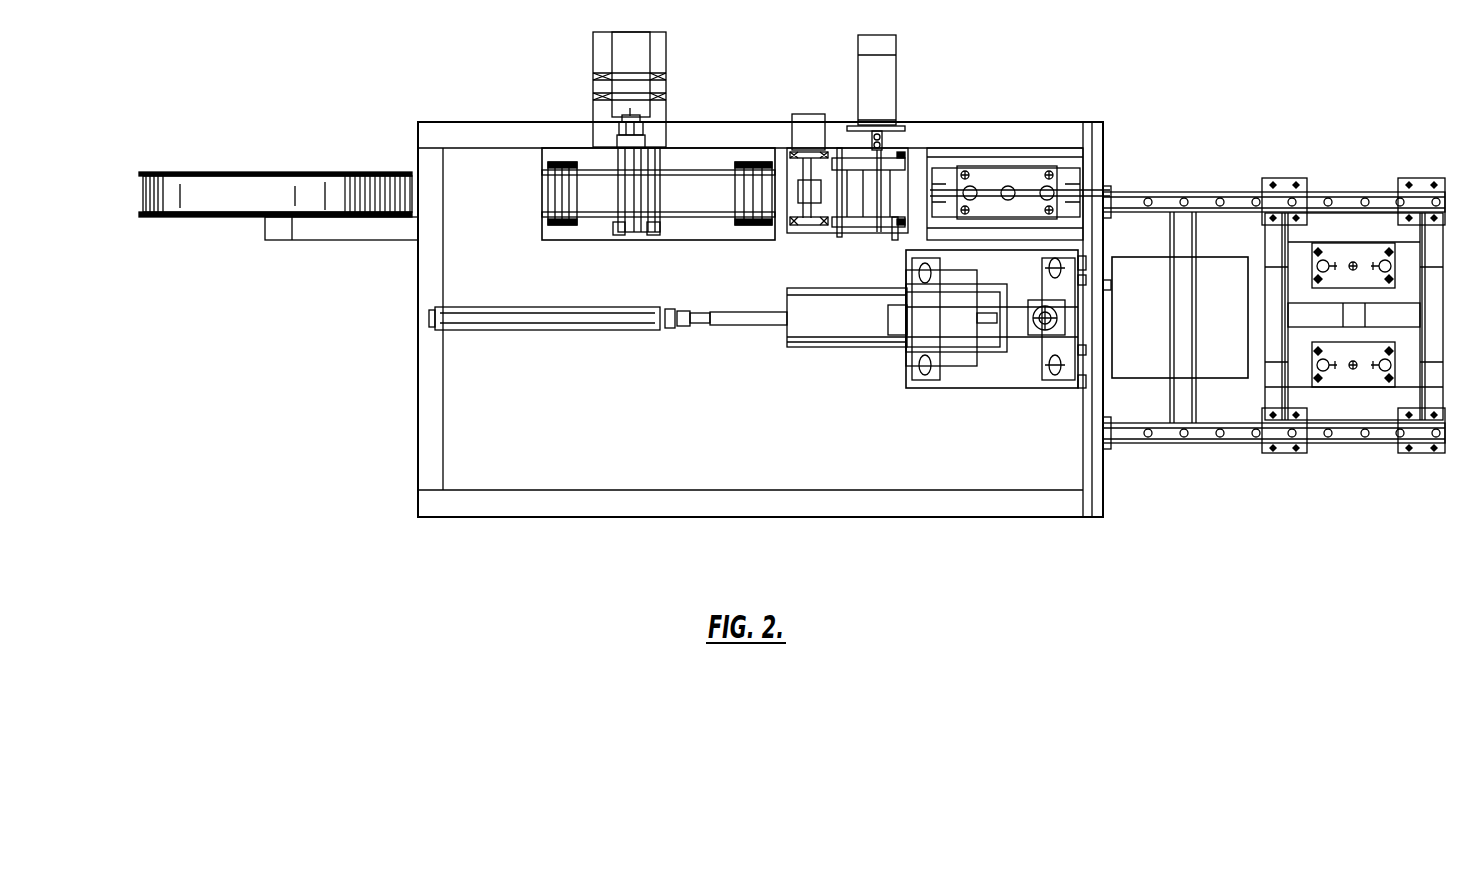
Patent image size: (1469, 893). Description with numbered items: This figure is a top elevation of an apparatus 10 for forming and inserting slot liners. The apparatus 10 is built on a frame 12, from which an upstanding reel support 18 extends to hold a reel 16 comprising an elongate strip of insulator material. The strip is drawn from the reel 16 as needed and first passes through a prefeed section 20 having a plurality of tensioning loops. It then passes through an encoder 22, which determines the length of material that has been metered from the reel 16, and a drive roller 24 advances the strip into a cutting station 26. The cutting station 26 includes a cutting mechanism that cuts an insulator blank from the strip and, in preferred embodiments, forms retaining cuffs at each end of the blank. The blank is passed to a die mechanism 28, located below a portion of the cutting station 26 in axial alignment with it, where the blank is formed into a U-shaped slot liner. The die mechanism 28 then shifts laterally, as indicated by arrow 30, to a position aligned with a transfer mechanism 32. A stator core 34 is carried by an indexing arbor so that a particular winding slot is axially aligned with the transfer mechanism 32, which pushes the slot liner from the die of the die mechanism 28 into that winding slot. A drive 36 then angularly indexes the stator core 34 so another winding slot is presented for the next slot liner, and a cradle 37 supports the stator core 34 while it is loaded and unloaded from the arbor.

The apparatus 10 is at (1156, 86).
The frame 12 is at (514, 518).
The reel 16 is at (230, 190).
The reel support 18 is at (333, 232).
The prefeed section 20 is at (682, 250).
The encoder 22 is at (808, 105).
The drive roller 24 is at (878, 246).
The cutting station 26 is at (996, 132).
The die mechanism 28 is at (1020, 330).
The arrow 30 is at (966, 402).
The transfer mechanism 32 is at (750, 338).
The stator core 34 is at (1145, 262).
The drive 36 is at (828, 328).
The cradle 37 is at (1378, 458).